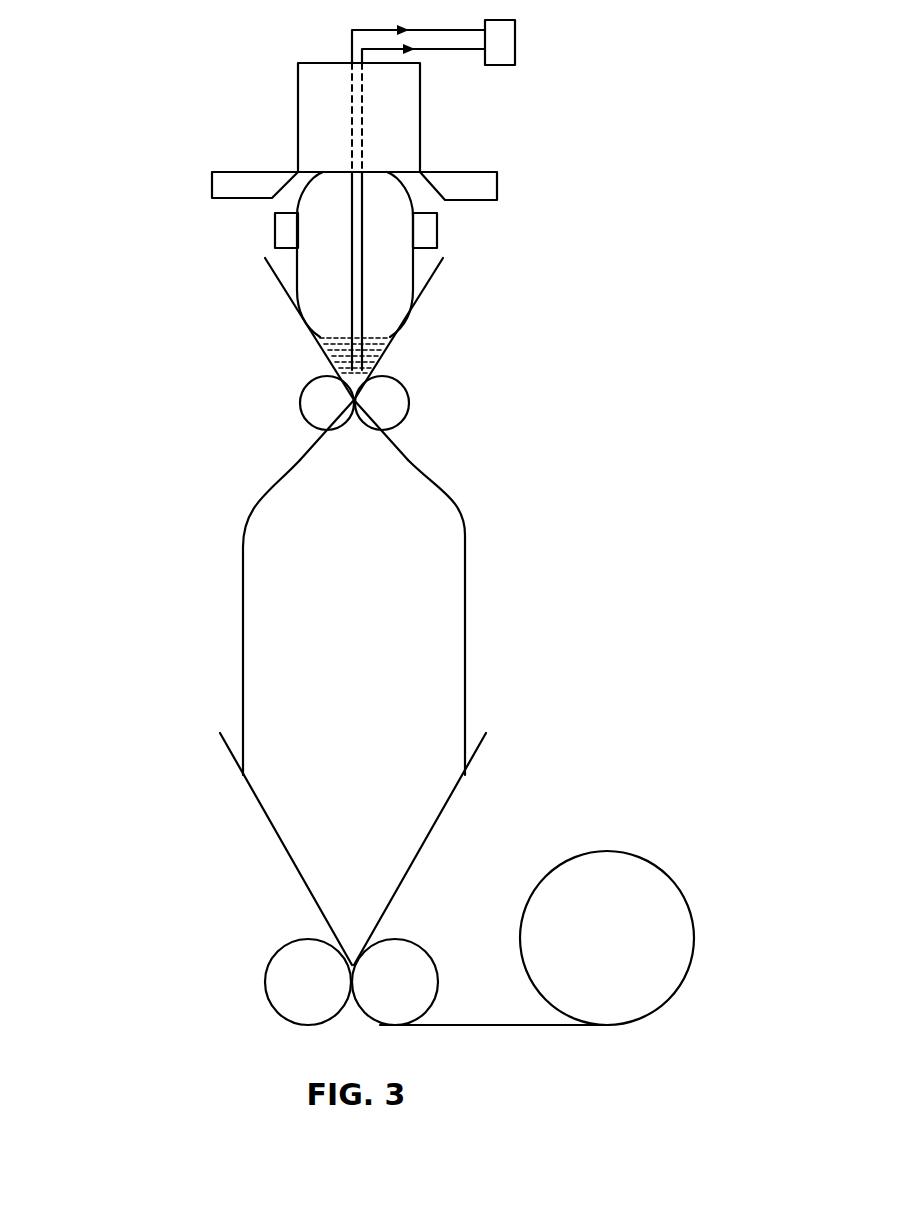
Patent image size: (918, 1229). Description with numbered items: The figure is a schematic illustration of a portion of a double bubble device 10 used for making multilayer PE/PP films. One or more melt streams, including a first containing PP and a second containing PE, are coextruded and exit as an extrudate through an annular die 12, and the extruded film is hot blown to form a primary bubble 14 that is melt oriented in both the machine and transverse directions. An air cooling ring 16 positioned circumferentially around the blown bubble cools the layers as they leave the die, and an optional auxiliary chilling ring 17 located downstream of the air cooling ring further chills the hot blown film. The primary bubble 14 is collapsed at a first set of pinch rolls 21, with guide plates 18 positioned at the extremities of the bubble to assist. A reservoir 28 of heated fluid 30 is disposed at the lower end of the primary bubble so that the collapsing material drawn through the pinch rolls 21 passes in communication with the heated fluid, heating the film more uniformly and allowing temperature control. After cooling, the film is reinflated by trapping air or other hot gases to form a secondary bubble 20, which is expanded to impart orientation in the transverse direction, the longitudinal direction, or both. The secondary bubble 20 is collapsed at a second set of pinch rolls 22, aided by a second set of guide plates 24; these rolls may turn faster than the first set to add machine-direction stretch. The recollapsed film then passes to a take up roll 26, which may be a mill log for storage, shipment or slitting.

The device 10 is at (146, 147).
The annular die 12 is at (298, 107).
The primary bubble 14 is at (290, 260).
The air cooling ring 16 is at (498, 173).
The auxiliary chilling ring 17 is at (437, 240).
The guide plates 18 is at (282, 285).
The secondary bubble 20 is at (262, 492).
The pinch rolls 21 is at (403, 388).
The second set of pinch rolls 22 is at (277, 1012).
The second set of guide plates 24 is at (266, 818).
The take up roll 26 is at (665, 872).
The reservoir 28 is at (330, 358).
The heated fluid 30 is at (515, 50).